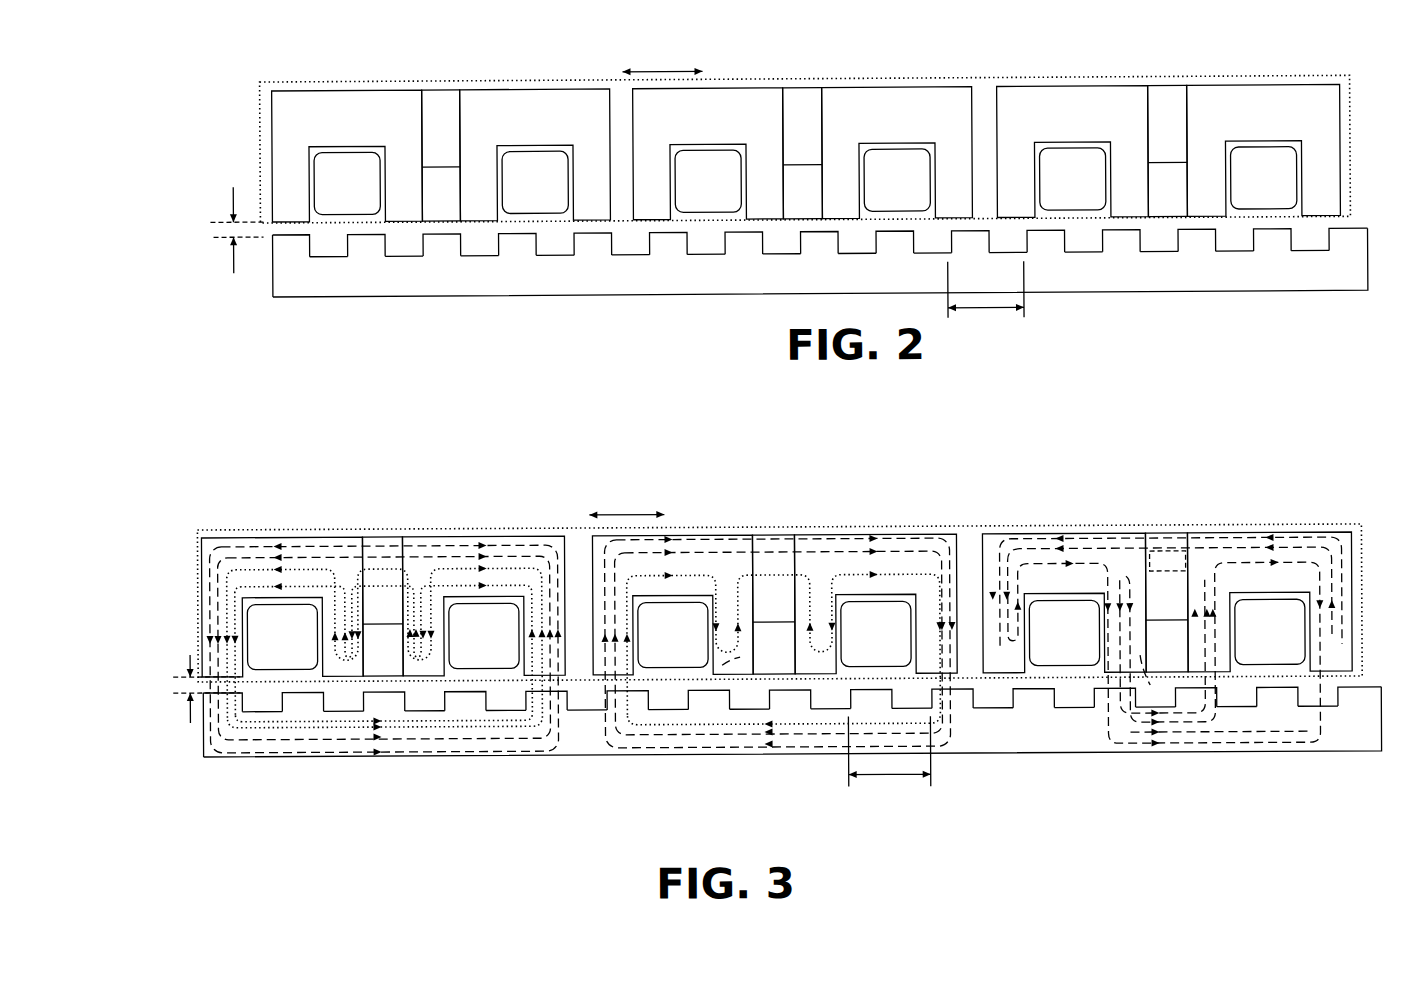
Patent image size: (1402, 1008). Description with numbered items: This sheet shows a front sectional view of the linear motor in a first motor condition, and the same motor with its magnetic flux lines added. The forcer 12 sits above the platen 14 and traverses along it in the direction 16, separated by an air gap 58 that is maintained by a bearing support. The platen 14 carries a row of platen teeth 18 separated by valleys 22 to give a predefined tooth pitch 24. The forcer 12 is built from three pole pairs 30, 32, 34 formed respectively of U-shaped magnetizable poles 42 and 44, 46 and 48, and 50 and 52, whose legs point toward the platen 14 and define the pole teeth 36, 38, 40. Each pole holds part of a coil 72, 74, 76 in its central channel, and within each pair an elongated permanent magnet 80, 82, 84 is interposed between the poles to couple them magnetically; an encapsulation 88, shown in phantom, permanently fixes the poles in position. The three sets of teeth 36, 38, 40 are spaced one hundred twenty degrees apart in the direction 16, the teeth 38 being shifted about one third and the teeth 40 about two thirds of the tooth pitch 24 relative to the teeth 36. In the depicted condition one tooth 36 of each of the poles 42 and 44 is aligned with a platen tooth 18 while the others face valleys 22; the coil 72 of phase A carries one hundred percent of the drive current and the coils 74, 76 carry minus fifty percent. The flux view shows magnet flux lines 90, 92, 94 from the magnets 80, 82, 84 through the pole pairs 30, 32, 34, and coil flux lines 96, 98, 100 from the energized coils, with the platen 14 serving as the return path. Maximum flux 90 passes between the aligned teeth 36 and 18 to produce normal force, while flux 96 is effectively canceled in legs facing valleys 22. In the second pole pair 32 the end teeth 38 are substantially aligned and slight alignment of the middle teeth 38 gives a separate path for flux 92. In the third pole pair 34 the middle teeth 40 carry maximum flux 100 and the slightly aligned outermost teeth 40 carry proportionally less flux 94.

In FIG. 2, the forcer 12 is at (818, 125).
In FIG. 3, the forcer 12 is at (795, 611).
In FIG. 2, the platen 14 is at (827, 285).
In FIG. 3, the platen 14 is at (997, 745).
In FIG. 2, the direction of movement 16 is at (660, 74).
In FIG. 3, the direction of movement 16 is at (612, 517).
In FIG. 2, the platen teeth 18 is at (372, 237).
In FIG. 3, the platen teeth 18 is at (298, 694).
In FIG. 2, the valleys 22 is at (550, 257).
In FIG. 3, the valleys 22 is at (502, 712).
In FIG. 2, the tooth pitch 24 is at (987, 312).
In FIG. 3, the tooth pitch 24 is at (890, 778).
In FIG. 2, the first pole pair 30 is at (440, 129).
In FIG. 3, the first pole pair 30 is at (385, 618).
In FIG. 2, the second pole pair 32 is at (802, 130).
In FIG. 3, the second pole pair 32 is at (774, 607).
In FIG. 2, the third pole pair 34 is at (1168, 128).
In FIG. 3, the third pole pair 34 is at (1167, 614).
In FIG. 2, the teeth of first pole pair 36 is at (285, 222).
In FIG. 3, the teeth of first pole pair 36 is at (423, 677).
In FIG. 2, the teeth of second pole pair 38 is at (830, 223).
In FIG. 3, the teeth of second pole pair 38 is at (806, 677).
In FIG. 2, the teeth of third pole pair 40 is at (1200, 222).
In FIG. 3, the teeth of third pole pair 40 is at (1133, 677).
In FIG. 2, the pole 42 is at (335, 134).
In FIG. 3, the pole 42 is at (268, 537).
In FIG. 2, the pole 44 is at (523, 134).
In FIG. 3, the pole 44 is at (508, 537).
In FIG. 2, the pole 46 is at (696, 134).
In FIG. 3, the pole 46 is at (675, 537).
In FIG. 2, the pole 48 is at (885, 134).
In FIG. 3, the pole 48 is at (865, 537).
In FIG. 2, the pole 50 is at (1060, 134).
In FIG. 3, the pole 50 is at (1073, 532).
In FIG. 2, the pole 52 is at (1252, 134).
In FIG. 3, the pole 52 is at (1265, 532).
In FIG. 2, the air gap 58 is at (233, 193).
In FIG. 3, the air gap 58 is at (190, 723).
In FIG. 2, the coil 72 is at (335, 192).
In FIG. 3, the coil 72 is at (270, 647).
In FIG. 2, the coil 74 is at (696, 192).
In FIG. 3, the coil 74 is at (661, 647).
In FIG. 2, the coil 76 is at (1060, 192).
In FIG. 3, the coil 76 is at (1052, 647).
In FIG. 2, the permanent magnet 80 is at (438, 91).
In FIG. 3, the permanent magnet 80 is at (377, 548).
In FIG. 2, the permanent magnet 82 is at (805, 101).
In FIG. 3, the permanent magnet 82 is at (780, 545).
In FIG. 2, the permanent magnet 84 is at (1170, 96).
In FIG. 3, the permanent magnet 84 is at (1162, 538).
In FIG. 2, the encapsulation 88 is at (908, 79).
In FIG. 3, the encapsulation 88 is at (950, 525).
In FIG. 3, the magnet flux lines 90 is at (337, 553).
In FIG. 3, the magnet flux lines 92 is at (815, 553).
In FIG. 3, the magnet flux lines 94 is at (1120, 552).
In FIG. 3, the coil flux lines 96 is at (460, 730).
In FIG. 3, the coil flux lines 98 is at (873, 728).
In FIG. 3, the coil flux lines 100 is at (1108, 698).